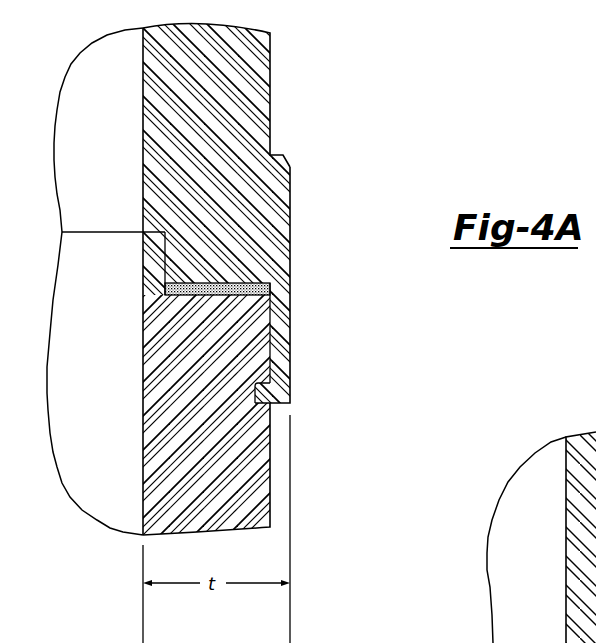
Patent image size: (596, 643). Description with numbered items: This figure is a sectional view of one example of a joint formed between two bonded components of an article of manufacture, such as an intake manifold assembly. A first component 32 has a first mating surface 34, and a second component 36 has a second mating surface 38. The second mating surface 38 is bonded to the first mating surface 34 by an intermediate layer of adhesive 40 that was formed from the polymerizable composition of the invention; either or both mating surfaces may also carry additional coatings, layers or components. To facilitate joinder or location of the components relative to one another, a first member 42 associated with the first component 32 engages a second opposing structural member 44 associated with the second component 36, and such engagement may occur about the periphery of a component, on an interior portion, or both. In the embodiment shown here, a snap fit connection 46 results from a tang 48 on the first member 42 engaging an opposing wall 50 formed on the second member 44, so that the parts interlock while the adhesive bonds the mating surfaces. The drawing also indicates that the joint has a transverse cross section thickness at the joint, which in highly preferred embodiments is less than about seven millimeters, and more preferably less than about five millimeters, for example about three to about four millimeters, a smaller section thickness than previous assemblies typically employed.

The first component 32 is at (232, 72).
The first mating surface 34 is at (236, 256).
The second component 36 is at (232, 490).
The second mating surface 38 is at (192, 358).
The intermediate layer of adhesive 40 is at (268, 282).
The first member 42 is at (283, 330).
The second opposing structural member 44 is at (230, 341).
The snap fit connection 46 is at (306, 399).
The tang 48 is at (282, 392).
The opposing wall 50 is at (258, 385).